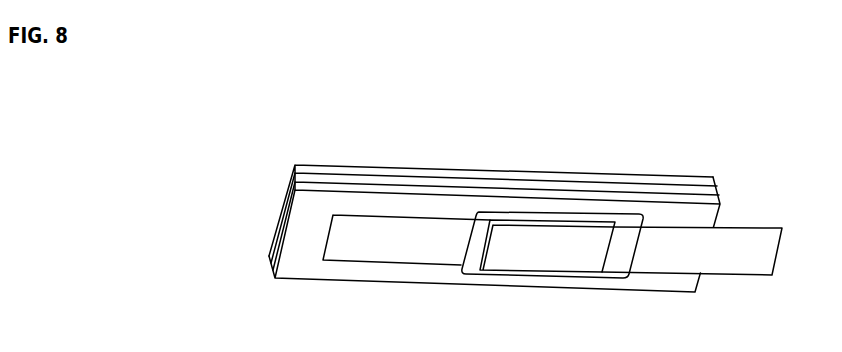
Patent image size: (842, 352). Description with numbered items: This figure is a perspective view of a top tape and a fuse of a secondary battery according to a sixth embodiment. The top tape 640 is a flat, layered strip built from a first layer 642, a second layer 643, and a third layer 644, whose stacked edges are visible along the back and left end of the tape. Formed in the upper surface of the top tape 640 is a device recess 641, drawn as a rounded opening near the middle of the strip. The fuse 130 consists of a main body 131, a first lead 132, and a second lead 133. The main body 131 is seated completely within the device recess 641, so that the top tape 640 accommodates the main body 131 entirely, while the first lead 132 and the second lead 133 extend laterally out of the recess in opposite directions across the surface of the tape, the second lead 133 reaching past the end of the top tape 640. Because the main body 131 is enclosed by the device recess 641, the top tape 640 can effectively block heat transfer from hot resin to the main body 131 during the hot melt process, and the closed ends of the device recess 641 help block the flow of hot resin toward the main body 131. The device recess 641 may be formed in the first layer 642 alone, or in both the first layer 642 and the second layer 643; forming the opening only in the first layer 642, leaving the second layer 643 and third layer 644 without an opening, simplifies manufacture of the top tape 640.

The fuse 130 is at (663, 130).
The main body 131 is at (545, 247).
The first lead 132 is at (452, 243).
The second lead 133 is at (647, 258).
The top tape 640 is at (716, 177).
The device recess 641 is at (472, 274).
The first layer 642 is at (290, 187).
The second layer 643 is at (296, 168).
The third layer 644 is at (335, 168).